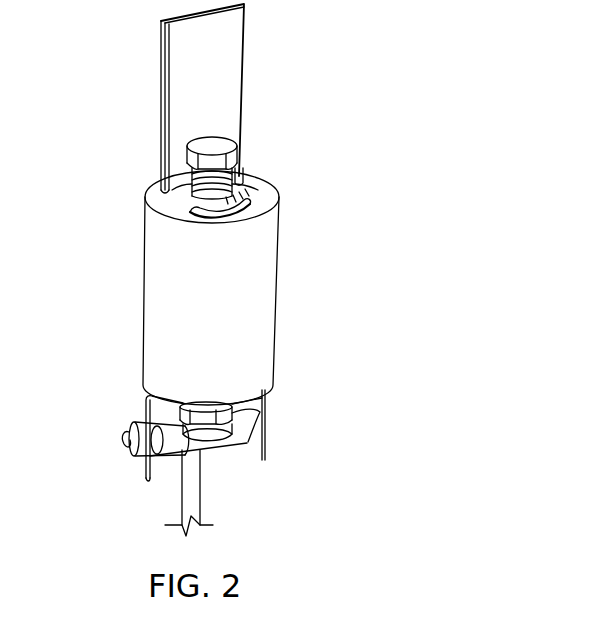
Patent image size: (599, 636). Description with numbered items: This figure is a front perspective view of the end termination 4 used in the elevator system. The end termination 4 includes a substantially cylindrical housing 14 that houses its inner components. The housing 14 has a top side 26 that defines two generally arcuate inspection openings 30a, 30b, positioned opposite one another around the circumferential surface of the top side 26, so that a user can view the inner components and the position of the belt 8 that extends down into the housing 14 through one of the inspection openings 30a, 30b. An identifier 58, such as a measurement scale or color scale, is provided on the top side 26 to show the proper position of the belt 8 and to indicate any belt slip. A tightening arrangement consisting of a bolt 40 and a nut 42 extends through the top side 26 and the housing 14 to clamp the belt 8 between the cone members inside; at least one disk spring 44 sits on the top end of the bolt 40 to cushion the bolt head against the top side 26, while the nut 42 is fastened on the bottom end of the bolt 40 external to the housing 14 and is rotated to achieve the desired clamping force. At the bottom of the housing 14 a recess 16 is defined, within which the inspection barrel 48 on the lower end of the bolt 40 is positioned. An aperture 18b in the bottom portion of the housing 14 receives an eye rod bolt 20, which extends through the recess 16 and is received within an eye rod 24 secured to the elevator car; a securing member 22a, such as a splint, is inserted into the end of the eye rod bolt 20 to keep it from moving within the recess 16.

The end termination 4 is at (76, 276).
The belt 8 is at (218, 50).
The housing 14 is at (256, 282).
The recess 16 is at (248, 448).
The aperture 18b is at (256, 418).
The eye rod bolt 20 is at (247, 447).
The securing member 22a is at (136, 434).
The eye rod 24 is at (190, 468).
The top side 26 is at (262, 190).
The inspection opening 30a is at (263, 212).
The inspection opening 30b is at (163, 217).
The bolt 40 is at (218, 145).
The nut 42 is at (262, 410).
The disk spring 44 is at (252, 172).
The inspection barrel 48 is at (207, 398).
The identifier 58 is at (194, 200).